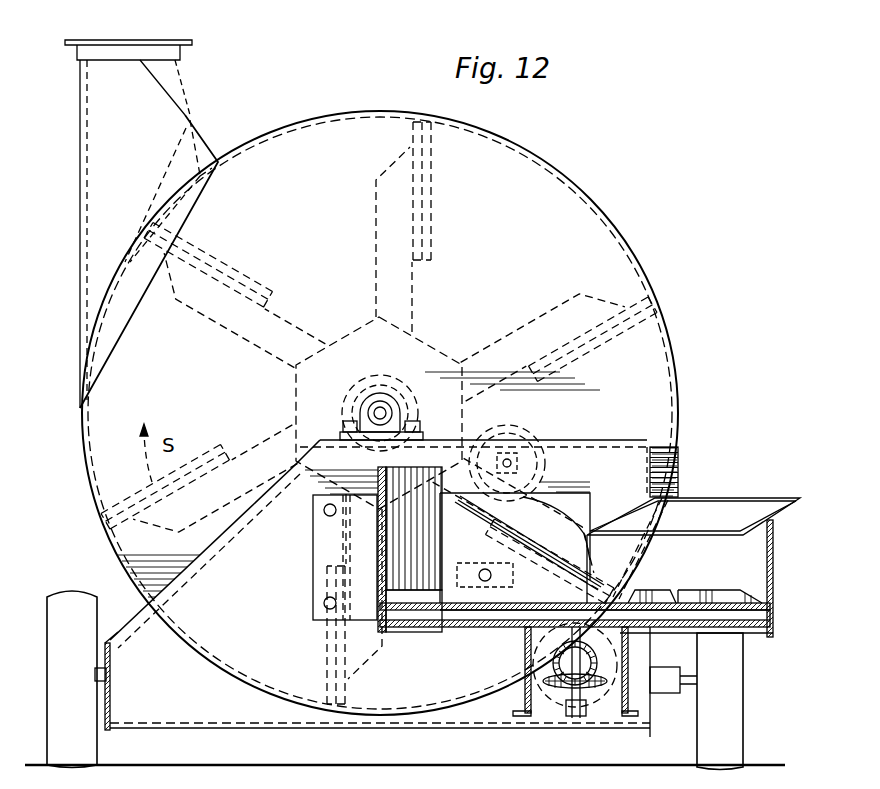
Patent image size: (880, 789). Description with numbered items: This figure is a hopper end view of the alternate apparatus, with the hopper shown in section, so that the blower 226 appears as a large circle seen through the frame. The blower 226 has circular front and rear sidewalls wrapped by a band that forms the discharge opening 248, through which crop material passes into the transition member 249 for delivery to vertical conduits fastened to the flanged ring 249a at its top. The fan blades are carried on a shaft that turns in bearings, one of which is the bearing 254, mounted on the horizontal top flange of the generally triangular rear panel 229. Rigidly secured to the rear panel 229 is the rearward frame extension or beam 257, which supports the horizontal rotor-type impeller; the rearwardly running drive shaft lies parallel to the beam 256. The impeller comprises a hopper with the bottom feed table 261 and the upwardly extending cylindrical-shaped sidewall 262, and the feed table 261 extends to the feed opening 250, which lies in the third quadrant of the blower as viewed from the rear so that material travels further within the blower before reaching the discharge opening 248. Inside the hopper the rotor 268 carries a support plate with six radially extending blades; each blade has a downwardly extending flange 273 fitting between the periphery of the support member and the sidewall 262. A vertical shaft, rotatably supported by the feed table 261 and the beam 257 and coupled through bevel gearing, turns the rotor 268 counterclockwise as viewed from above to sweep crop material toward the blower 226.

The blower 226 is at (636, 242).
The rear panel 229 is at (250, 716).
The discharge opening 248 is at (192, 130).
The transition member 249 is at (194, 78).
The flanged ring 249a is at (192, 41).
The feed opening 250 is at (325, 518).
The bearing 254 is at (425, 414).
The beam 256 is at (520, 690).
The rearward frame extension or beam 257 is at (628, 716).
The bottom feed table 261 is at (730, 633).
The cylindrical-shaped sidewall 262 is at (774, 576).
The rotor 268 is at (649, 596).
The downwardly extending flange 273 is at (774, 626).